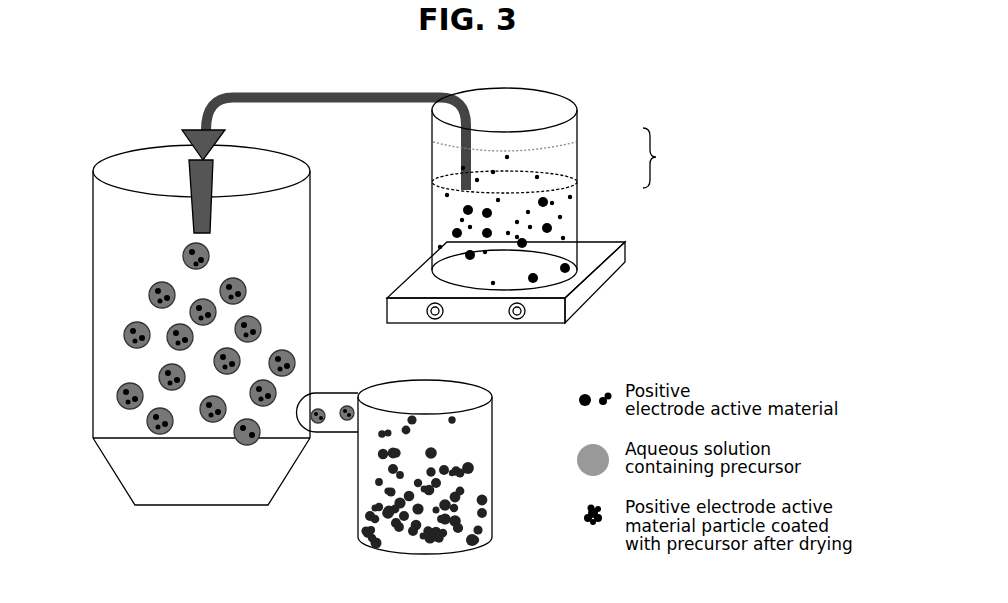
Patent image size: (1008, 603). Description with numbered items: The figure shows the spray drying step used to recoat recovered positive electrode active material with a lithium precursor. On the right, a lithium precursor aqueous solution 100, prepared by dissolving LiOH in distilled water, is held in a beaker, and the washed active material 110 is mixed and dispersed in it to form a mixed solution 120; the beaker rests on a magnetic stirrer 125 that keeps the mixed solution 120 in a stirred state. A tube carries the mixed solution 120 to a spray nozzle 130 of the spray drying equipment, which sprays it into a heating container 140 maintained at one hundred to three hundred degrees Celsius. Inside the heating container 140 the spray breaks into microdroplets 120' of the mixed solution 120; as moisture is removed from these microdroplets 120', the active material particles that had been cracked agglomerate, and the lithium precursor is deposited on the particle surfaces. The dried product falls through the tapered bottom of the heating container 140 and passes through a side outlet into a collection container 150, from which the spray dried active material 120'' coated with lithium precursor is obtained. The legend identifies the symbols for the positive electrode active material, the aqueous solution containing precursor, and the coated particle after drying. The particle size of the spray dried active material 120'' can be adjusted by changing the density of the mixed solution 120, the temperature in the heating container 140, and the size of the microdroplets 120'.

The lithium precursor aqueous solution 100 is at (567, 179).
The active material 110 is at (532, 157).
The mixed solution 120 is at (667, 158).
The microdroplets 120' is at (169, 344).
The spray dried active material 120'' is at (457, 481).
The magnetic stirrer 125 is at (596, 241).
The spray nozzle 130 is at (187, 178).
The heating container 140 is at (118, 222).
The collection container 150 is at (482, 393).